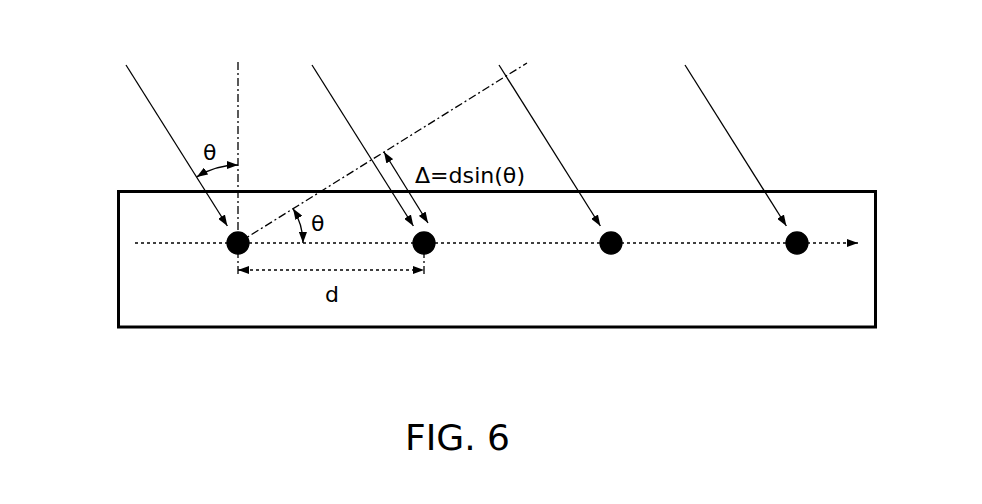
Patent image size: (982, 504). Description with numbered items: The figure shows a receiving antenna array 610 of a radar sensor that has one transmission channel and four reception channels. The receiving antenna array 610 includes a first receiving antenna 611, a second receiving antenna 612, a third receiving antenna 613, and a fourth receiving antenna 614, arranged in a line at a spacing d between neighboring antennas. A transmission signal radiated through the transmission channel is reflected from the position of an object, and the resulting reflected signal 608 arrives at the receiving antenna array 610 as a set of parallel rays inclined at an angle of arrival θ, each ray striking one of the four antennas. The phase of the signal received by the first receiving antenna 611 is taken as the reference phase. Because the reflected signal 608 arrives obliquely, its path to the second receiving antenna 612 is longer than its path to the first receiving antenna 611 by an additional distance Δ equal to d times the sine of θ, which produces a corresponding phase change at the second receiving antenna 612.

The reflected signal 608 is at (135, 78).
The receiving antenna array 610 is at (118, 260).
The first receiving antenna 611 is at (228, 252).
The second receiving antenna 612 is at (434, 251).
The third receiving antenna 613 is at (621, 251).
The fourth receiving antenna 614 is at (808, 249).